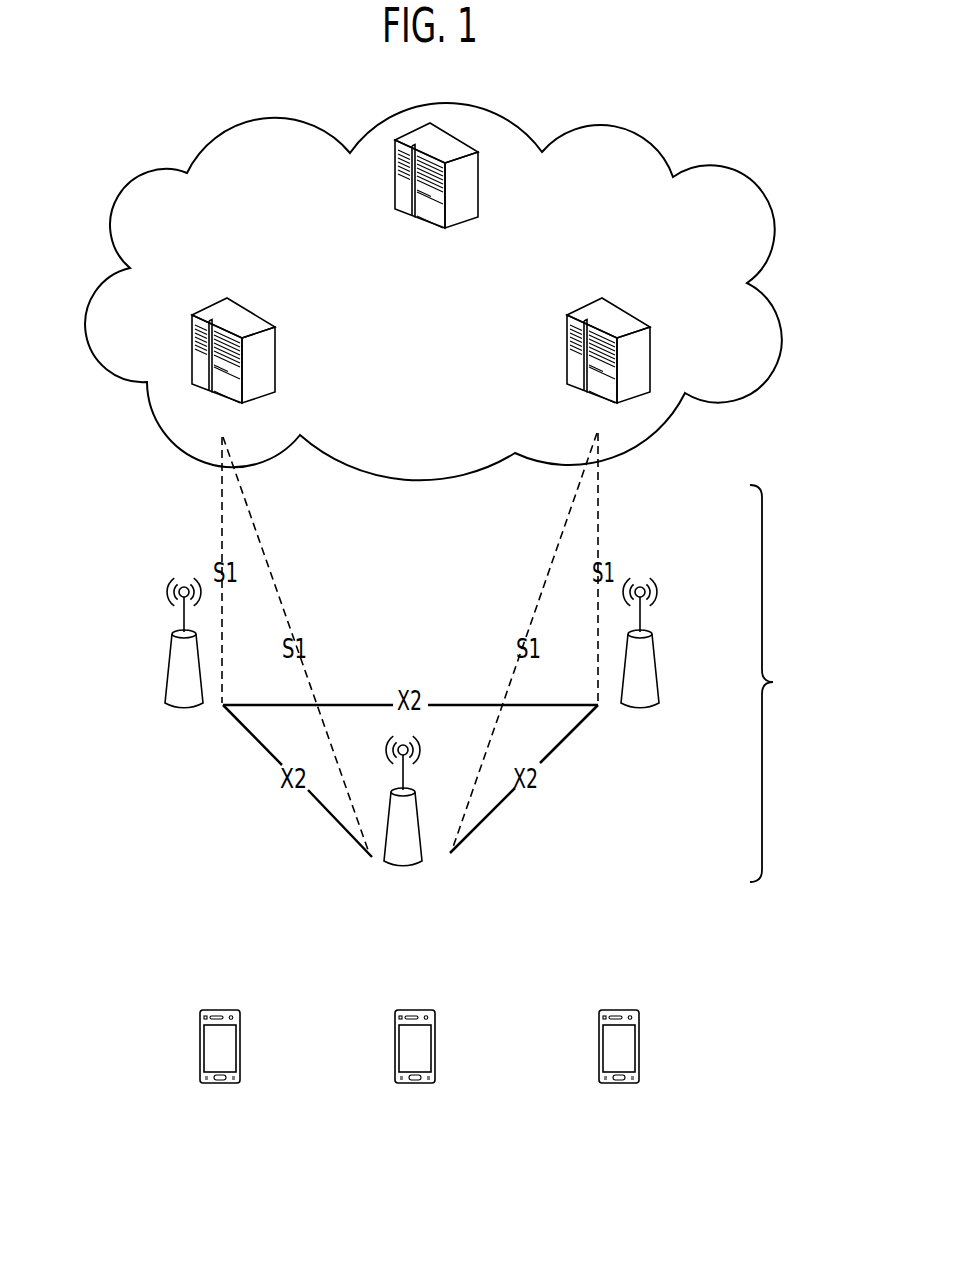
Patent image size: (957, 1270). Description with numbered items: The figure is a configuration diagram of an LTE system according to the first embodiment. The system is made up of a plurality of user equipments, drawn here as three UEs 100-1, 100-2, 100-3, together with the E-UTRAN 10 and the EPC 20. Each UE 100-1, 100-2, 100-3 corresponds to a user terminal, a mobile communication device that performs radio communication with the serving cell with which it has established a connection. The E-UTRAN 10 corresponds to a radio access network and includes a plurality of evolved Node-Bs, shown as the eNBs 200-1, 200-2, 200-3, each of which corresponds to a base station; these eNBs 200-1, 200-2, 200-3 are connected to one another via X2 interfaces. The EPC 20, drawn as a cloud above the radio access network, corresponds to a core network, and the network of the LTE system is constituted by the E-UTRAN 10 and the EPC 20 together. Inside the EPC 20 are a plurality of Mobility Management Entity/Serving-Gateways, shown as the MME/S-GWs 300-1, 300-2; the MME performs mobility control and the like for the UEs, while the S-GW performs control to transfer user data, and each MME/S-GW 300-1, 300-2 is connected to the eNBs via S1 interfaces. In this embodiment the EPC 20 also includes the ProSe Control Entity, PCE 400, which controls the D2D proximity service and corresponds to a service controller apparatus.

The EPC 20 is at (650, 142).
The ProSe Control Entity (PCE) 400 is at (479, 197).
The MME/S-GW 300-1 is at (257, 312).
The MME/S-GW 300-2 is at (637, 290).
The eNB 200-1 is at (168, 668).
The eNB 200-2 is at (420, 837).
The eNB 200-3 is at (652, 648).
The E-UTRAN 10 is at (813, 683).
The UE 100-1 is at (231, 1009).
The UE 100-2 is at (412, 1009).
The UE 100-3 is at (623, 1009).